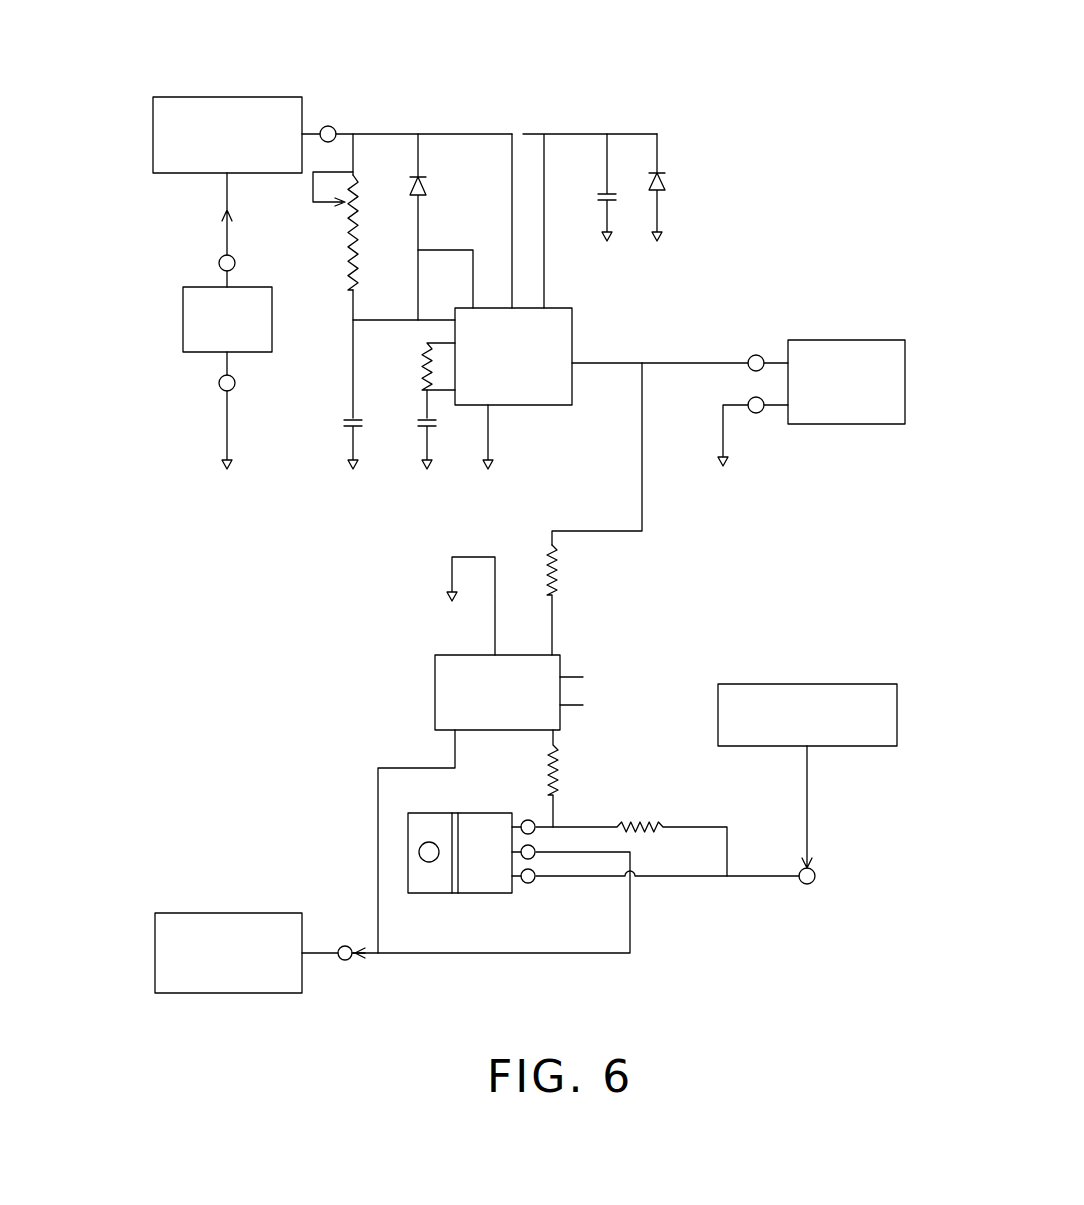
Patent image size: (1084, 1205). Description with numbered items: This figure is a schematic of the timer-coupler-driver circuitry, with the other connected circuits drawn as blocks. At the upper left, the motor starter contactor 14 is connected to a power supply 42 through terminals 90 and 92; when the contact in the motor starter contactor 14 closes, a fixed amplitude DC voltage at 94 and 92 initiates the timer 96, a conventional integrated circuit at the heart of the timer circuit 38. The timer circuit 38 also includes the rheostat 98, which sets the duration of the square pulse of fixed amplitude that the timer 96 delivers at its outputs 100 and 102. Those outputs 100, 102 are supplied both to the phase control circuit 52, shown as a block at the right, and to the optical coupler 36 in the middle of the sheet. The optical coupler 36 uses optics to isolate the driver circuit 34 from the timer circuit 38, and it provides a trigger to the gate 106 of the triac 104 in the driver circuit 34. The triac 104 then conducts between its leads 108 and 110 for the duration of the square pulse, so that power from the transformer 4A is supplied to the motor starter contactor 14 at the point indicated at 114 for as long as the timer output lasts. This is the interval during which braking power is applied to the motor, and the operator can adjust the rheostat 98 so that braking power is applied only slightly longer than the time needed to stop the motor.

The motor starter contactor 14 is at (247, 97).
The fixed amplitude DC voltage point 94 is at (334, 128).
The timer circuit 38 is at (547, 70).
The rheostat 98 is at (354, 205).
The terminal 90 is at (235, 262).
The power supply 42 is at (272, 318).
The fixed amplitude DC voltage point 92 is at (232, 390).
The timer 96 is at (572, 334).
The timer output 100 is at (749, 357).
The phase control circuit 52 is at (906, 382).
The timer output 102 is at (748, 405).
The optical coupler 36 is at (576, 642).
The transformer 4A is at (790, 684).
The driver circuit 34 is at (581, 782).
The triac 104 is at (472, 813).
The gate 106 is at (528, 817).
The triac lead 108 is at (541, 842).
The triac lead 110 is at (541, 866).
The power supply point 114 is at (346, 946).